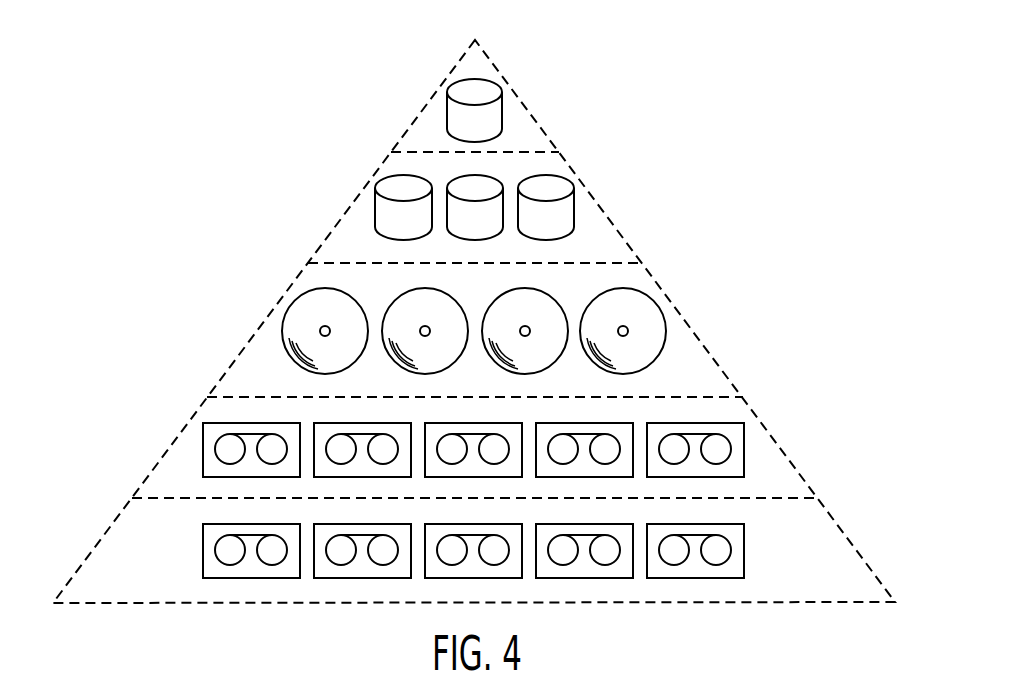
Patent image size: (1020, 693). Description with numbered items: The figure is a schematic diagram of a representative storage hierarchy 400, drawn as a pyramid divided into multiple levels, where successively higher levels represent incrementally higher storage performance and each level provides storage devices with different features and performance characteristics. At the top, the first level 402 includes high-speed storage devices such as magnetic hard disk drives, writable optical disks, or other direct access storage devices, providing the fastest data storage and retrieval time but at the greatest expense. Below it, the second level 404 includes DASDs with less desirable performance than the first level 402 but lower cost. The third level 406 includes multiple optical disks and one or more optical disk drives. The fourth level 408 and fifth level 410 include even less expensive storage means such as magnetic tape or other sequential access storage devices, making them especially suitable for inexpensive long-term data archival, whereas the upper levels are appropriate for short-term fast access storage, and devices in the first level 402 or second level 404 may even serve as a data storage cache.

The storage hierarchy 400 is at (670, 180).
The first level 402 is at (429, 103).
The second level 404 is at (357, 198).
The third level 406 is at (258, 329).
The fourth level 408 is at (177, 437).
The fifth level 410 is at (114, 522).